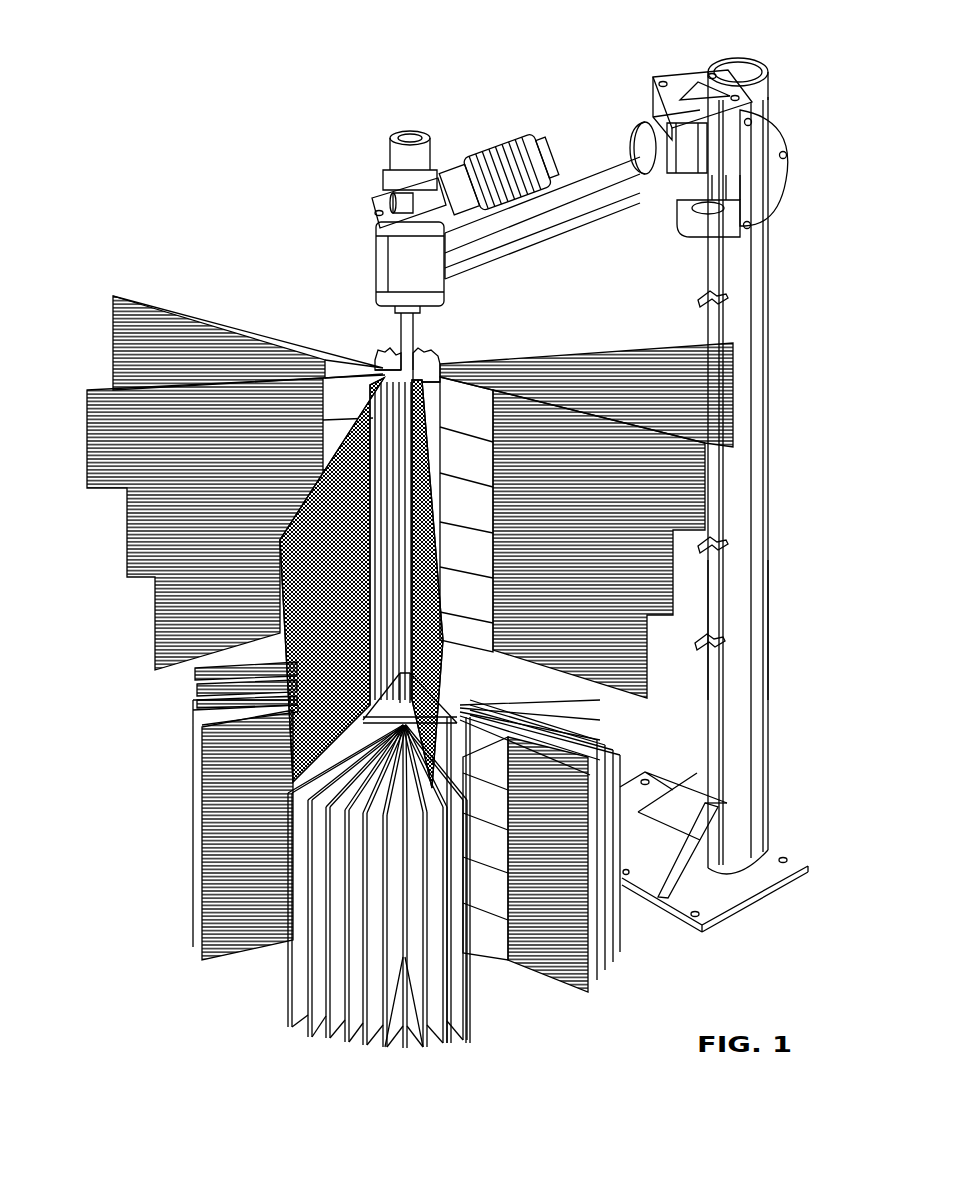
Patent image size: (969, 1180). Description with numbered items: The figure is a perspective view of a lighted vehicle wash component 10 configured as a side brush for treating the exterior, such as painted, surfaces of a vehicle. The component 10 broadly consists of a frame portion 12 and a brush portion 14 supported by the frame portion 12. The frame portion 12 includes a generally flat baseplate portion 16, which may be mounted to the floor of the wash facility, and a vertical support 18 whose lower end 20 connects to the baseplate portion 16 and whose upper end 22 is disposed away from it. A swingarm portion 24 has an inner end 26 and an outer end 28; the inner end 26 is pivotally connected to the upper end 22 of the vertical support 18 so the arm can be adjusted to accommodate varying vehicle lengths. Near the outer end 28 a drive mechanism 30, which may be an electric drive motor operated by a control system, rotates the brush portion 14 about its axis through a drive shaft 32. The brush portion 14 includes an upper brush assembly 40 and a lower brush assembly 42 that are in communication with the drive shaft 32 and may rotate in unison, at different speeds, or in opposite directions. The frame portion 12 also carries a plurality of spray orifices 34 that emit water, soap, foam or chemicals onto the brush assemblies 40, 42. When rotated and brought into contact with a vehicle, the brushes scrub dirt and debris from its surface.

The lighted vehicle wash component 10 is at (539, 96).
The frame portion 12 is at (774, 301).
The brush portion 14 is at (148, 696).
The baseplate portion 16 is at (777, 860).
The vertical support 18 is at (757, 561).
The lower end 20 is at (758, 846).
The upper end 22 is at (763, 97).
The swingarm portion 24 is at (592, 186).
The inner end 26 is at (676, 128).
The outer end 28 is at (386, 197).
The drive mechanism 30 is at (417, 128).
The drive shaft 32 is at (378, 343).
The spray orifices 34 is at (728, 298).
The upper brush assembly 40 is at (108, 518).
The lower brush assembly 42 is at (207, 988).